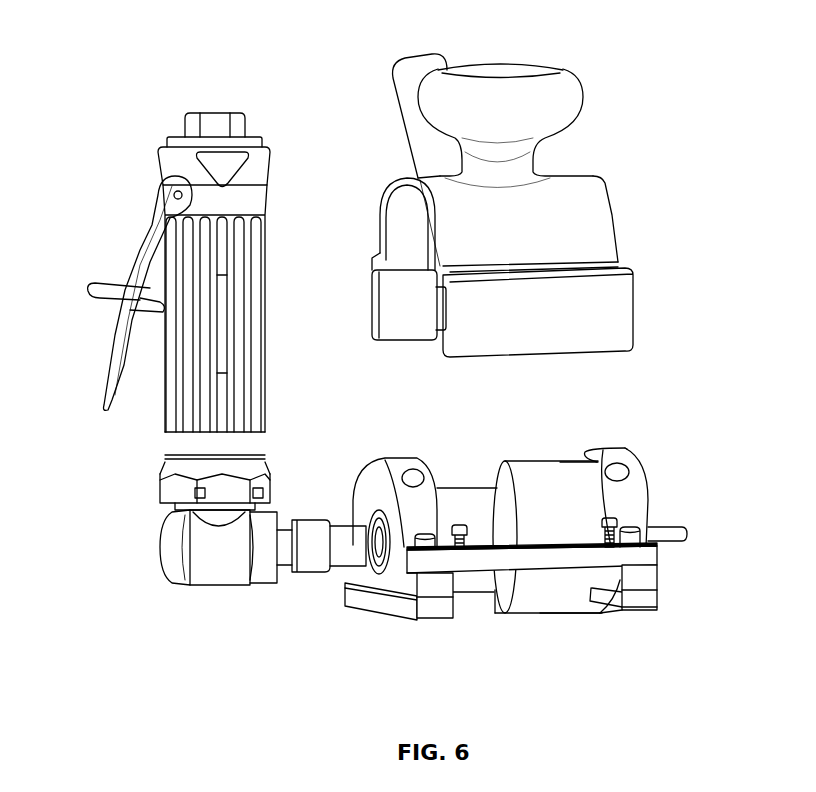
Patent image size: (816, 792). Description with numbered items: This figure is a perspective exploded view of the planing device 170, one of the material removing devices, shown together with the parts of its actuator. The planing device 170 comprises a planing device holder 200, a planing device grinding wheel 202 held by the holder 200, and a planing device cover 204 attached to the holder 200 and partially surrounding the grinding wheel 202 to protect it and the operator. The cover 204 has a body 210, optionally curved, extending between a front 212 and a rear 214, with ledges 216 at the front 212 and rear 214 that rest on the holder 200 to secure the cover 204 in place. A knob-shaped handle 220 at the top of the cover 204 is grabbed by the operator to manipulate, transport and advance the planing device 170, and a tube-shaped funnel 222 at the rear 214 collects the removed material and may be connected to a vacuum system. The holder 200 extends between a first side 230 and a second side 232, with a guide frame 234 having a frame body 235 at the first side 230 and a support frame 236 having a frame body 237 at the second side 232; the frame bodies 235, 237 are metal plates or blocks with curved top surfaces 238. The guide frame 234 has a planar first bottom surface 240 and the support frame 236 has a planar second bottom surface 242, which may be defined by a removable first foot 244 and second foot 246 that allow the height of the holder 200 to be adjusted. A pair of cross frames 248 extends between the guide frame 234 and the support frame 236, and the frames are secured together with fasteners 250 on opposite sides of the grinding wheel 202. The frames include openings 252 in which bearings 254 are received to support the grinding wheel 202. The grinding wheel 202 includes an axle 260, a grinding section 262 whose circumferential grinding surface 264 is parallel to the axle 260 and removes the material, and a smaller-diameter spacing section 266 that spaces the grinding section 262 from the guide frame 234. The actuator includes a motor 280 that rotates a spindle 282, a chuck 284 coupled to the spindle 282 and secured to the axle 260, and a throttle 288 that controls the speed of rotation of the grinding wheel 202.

The planing device 170 is at (258, 50).
The motor 280 is at (183, 400).
The throttle 288 is at (117, 345).
The spindle 282 is at (178, 553).
The chuck 284 is at (332, 540).
The planing device cover 204 is at (606, 140).
The handle 220 is at (565, 96).
The funnel 222 is at (405, 91).
The body 210 is at (580, 213).
The rear 214 is at (373, 300).
The ledges 216 is at (403, 277).
The front 212 is at (484, 346).
The second side 232 is at (655, 447).
The first side 230 is at (351, 463).
The frame body 235 is at (382, 470).
The curved top surfaces 238 is at (606, 451).
The planing device holder 200 is at (636, 488).
The spacing section 266 is at (457, 500).
The grinding section 262 is at (560, 488).
The planing device grinding wheel 202 is at (540, 616).
The grinding surface 264 is at (563, 610).
The cross frames 248 is at (490, 596).
The fasteners 250 is at (613, 525).
The axle 260 is at (681, 532).
The frame body 237 is at (650, 574).
The support frame 236 is at (658, 580).
The second foot 246 is at (646, 605).
The second bottom surface 242 is at (607, 613).
The first foot 244 is at (436, 611).
The first bottom surface 240 is at (385, 619).
The guide frame 234 is at (366, 581).
The openings 252 is at (377, 578).
The bearings 254 is at (372, 563).